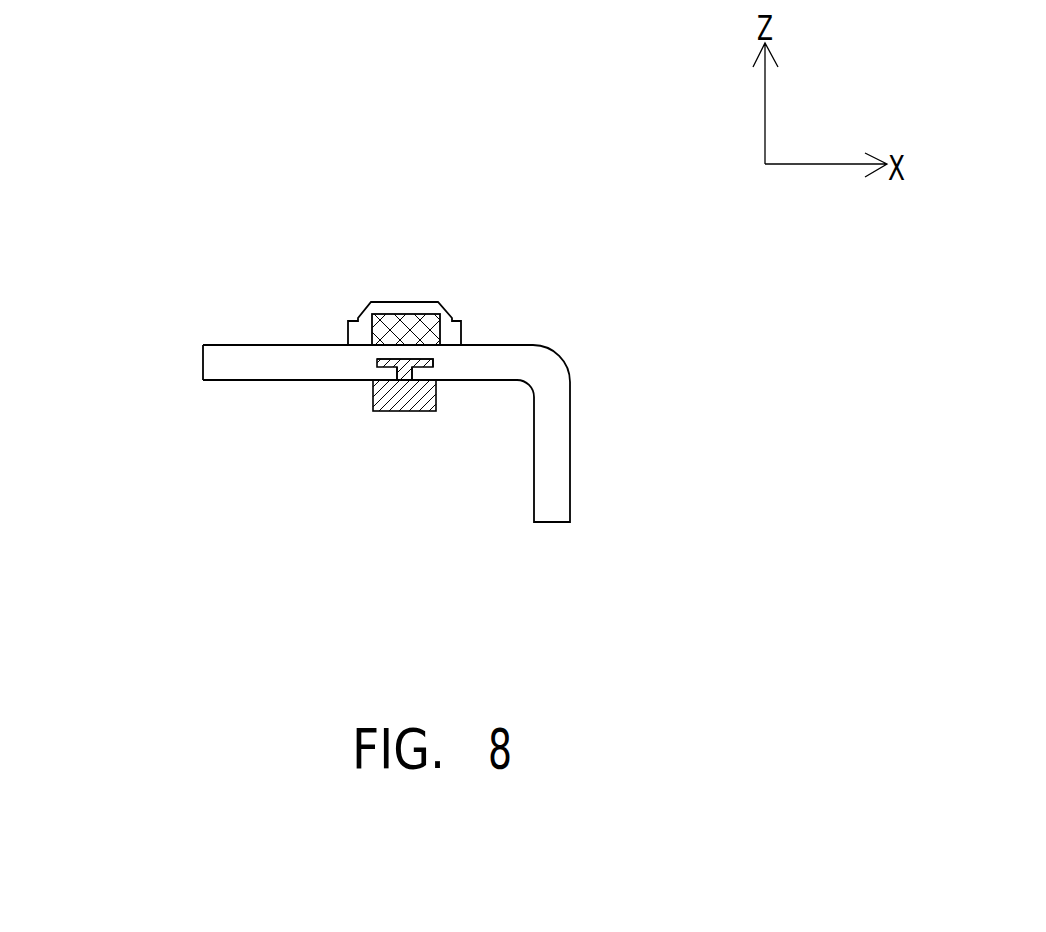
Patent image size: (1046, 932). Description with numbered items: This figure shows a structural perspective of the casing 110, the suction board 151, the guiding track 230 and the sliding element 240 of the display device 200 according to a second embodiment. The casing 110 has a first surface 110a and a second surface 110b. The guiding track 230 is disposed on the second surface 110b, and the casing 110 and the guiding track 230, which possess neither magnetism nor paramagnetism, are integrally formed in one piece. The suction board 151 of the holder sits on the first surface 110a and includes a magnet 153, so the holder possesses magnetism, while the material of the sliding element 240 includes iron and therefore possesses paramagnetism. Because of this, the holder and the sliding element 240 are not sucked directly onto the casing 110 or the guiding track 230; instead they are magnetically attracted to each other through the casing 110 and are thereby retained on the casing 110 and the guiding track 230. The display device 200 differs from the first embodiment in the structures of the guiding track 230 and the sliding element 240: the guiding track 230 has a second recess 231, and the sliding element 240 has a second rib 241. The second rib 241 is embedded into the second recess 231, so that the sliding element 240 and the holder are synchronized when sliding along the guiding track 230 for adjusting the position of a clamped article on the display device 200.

The display device 200 is at (102, 55).
The casing 110 is at (562, 453).
The first surface 110a is at (286, 322).
The second surface 110b is at (232, 402).
The suction board 151 is at (447, 318).
The magnet 153 is at (380, 316).
The guiding track 230 is at (413, 374).
The second recess 231 is at (357, 372).
The sliding element 240 is at (422, 411).
The second rib 241 is at (410, 360).